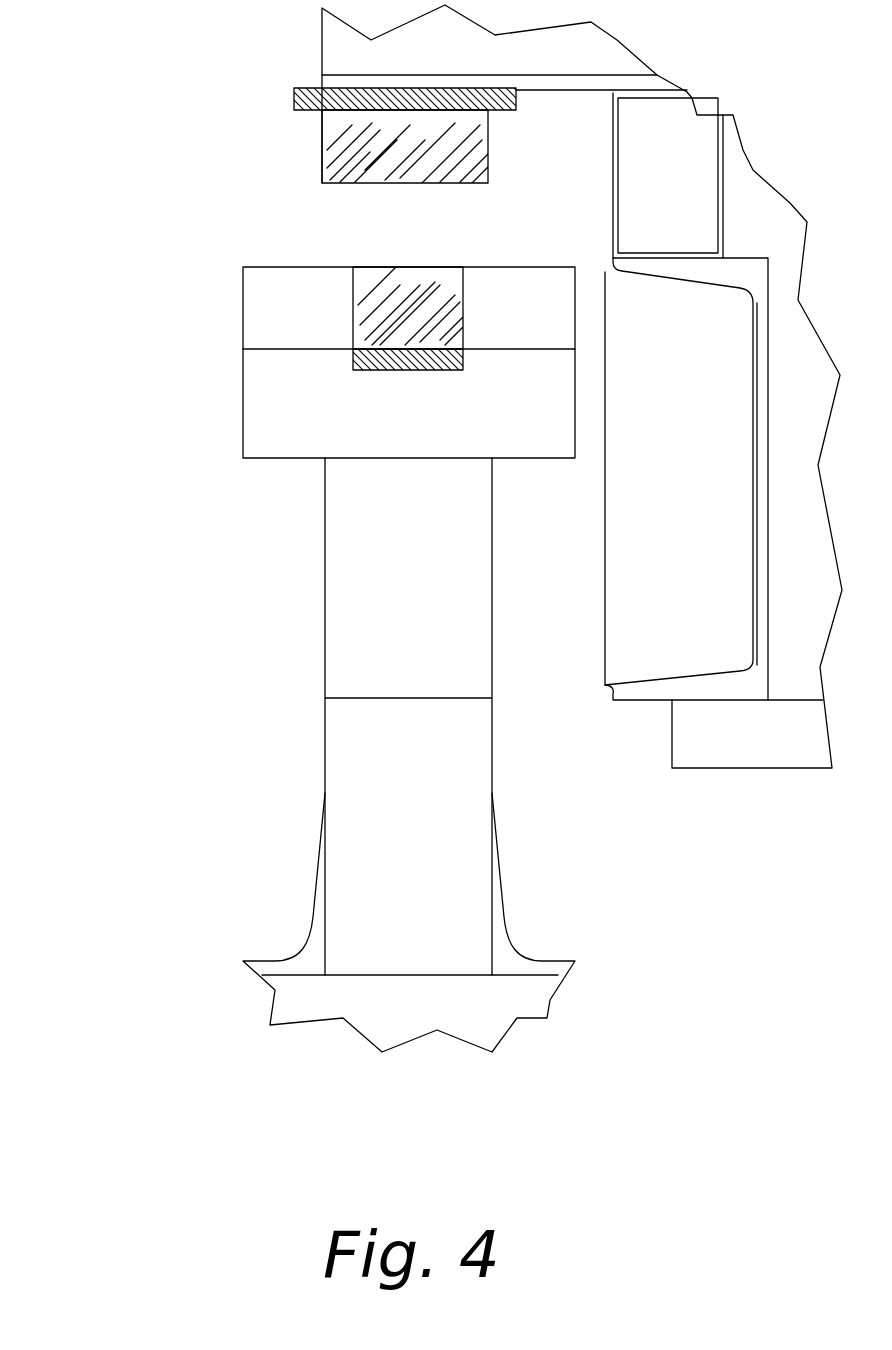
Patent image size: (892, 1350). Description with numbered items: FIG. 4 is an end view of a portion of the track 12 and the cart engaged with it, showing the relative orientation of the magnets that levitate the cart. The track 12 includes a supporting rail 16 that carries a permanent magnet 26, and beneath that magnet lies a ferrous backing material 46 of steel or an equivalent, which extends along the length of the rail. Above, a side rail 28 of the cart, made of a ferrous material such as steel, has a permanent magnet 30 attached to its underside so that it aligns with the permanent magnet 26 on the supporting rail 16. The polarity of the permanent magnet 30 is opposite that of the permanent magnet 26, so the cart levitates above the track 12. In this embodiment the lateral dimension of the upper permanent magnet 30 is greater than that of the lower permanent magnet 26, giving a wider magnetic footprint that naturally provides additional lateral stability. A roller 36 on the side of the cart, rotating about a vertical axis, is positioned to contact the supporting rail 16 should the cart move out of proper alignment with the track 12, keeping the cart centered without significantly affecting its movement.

The track 12 is at (104, 408).
The supporting rail 16 is at (243, 440).
The permanent magnet 26 is at (376, 267).
The side rail 28 is at (292, 97).
The permanent magnet 30 is at (320, 147).
The roller 36 is at (604, 660).
The ferrous backing material 46 is at (353, 360).